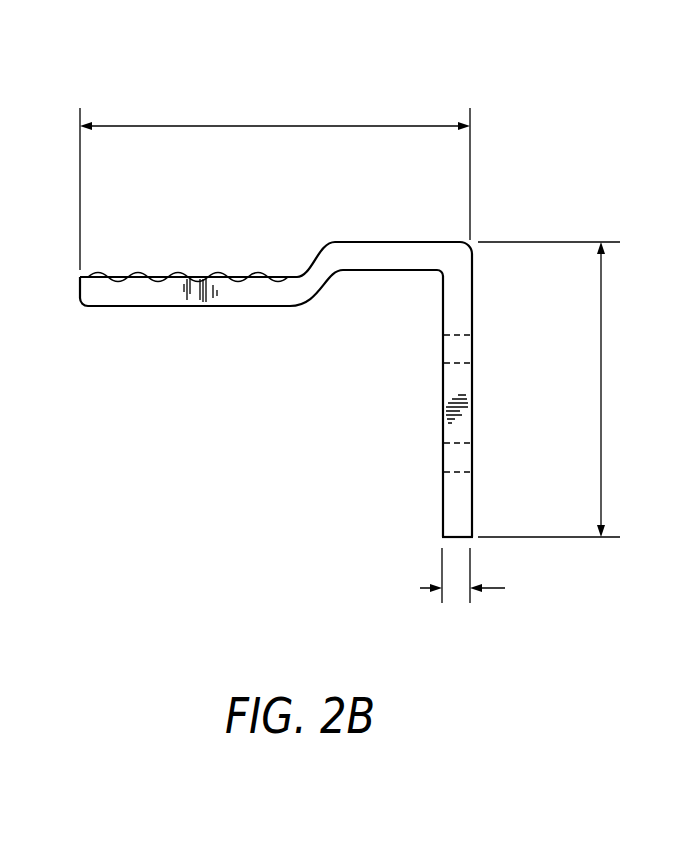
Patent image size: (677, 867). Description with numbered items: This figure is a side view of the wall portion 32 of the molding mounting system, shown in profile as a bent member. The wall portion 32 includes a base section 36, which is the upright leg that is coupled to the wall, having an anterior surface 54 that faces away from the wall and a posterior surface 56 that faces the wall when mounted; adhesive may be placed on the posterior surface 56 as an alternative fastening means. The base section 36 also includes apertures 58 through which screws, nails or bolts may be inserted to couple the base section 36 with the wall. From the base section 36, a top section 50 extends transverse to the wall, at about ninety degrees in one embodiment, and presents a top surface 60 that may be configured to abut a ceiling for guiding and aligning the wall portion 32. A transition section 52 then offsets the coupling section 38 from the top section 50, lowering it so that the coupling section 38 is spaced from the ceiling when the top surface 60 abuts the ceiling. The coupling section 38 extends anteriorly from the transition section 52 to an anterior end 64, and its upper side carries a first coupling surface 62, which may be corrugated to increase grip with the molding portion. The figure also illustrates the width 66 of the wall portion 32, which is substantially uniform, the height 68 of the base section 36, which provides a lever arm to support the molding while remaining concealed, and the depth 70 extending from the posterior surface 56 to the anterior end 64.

The wall portion 32 is at (299, 296).
The base section 36 is at (486, 494).
The coupling section 38 is at (110, 314).
The top section 50 is at (392, 255).
The transition section 52 is at (292, 277).
The anterior surface 54 is at (442, 500).
The posterior surface 56 is at (473, 397).
The apertures 58 is at (442, 457).
The top surface 60 is at (335, 242).
The first coupling surface 62 is at (164, 270).
The anterior end 64 is at (78, 288).
The width 66 is at (503, 588).
The height 68 is at (604, 368).
The depth 70 is at (268, 126).